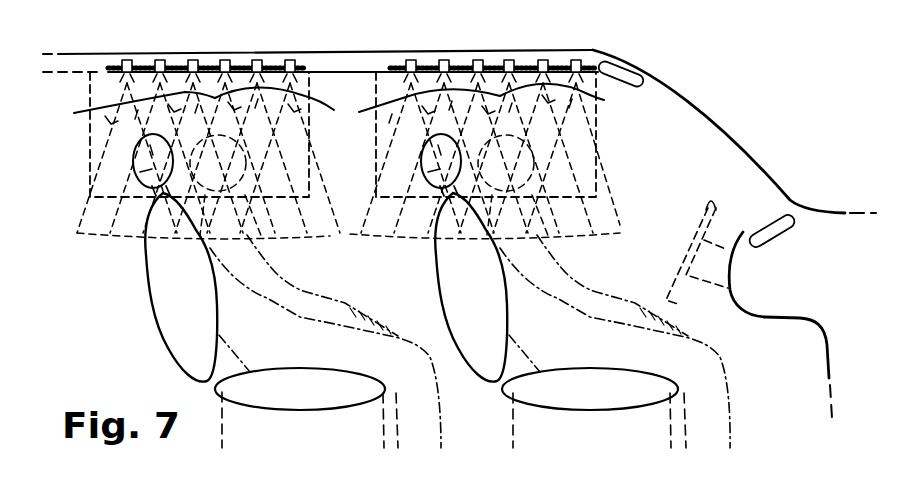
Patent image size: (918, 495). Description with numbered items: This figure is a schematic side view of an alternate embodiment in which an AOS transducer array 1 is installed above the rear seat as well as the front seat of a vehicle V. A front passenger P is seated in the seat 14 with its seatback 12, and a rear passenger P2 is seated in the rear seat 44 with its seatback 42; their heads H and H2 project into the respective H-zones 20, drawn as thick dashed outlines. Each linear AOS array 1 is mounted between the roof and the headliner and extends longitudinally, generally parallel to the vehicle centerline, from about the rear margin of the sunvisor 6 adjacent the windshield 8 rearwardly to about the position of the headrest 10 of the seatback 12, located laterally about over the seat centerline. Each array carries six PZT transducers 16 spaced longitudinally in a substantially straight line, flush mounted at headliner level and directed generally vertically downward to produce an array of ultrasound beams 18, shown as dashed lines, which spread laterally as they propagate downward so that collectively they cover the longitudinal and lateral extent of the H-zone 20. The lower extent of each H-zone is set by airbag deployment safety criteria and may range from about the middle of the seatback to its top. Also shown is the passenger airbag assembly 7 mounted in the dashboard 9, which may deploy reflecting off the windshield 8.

The linear AOS transducer array 1 is at (585, 46).
The sunvisor 6 is at (627, 73).
The passenger airbag assembly 7 is at (788, 241).
The windshield 8 is at (703, 113).
The dashboard 9 is at (750, 296).
The headrest 10 is at (147, 167).
The seatback 12 is at (482, 307).
The seat 14 is at (575, 398).
The PZT transducers 16 is at (127, 58).
The ultrasound beams 18 is at (341, 161).
The H-zone 20 is at (363, 84).
The rear seatback 42 is at (192, 310).
The rear seat 44 is at (282, 402).
The head H is at (514, 119).
The head H2 is at (196, 122).
The passenger P is at (541, 338).
The passenger P2 is at (255, 345).
The vehicle V is at (759, 146).